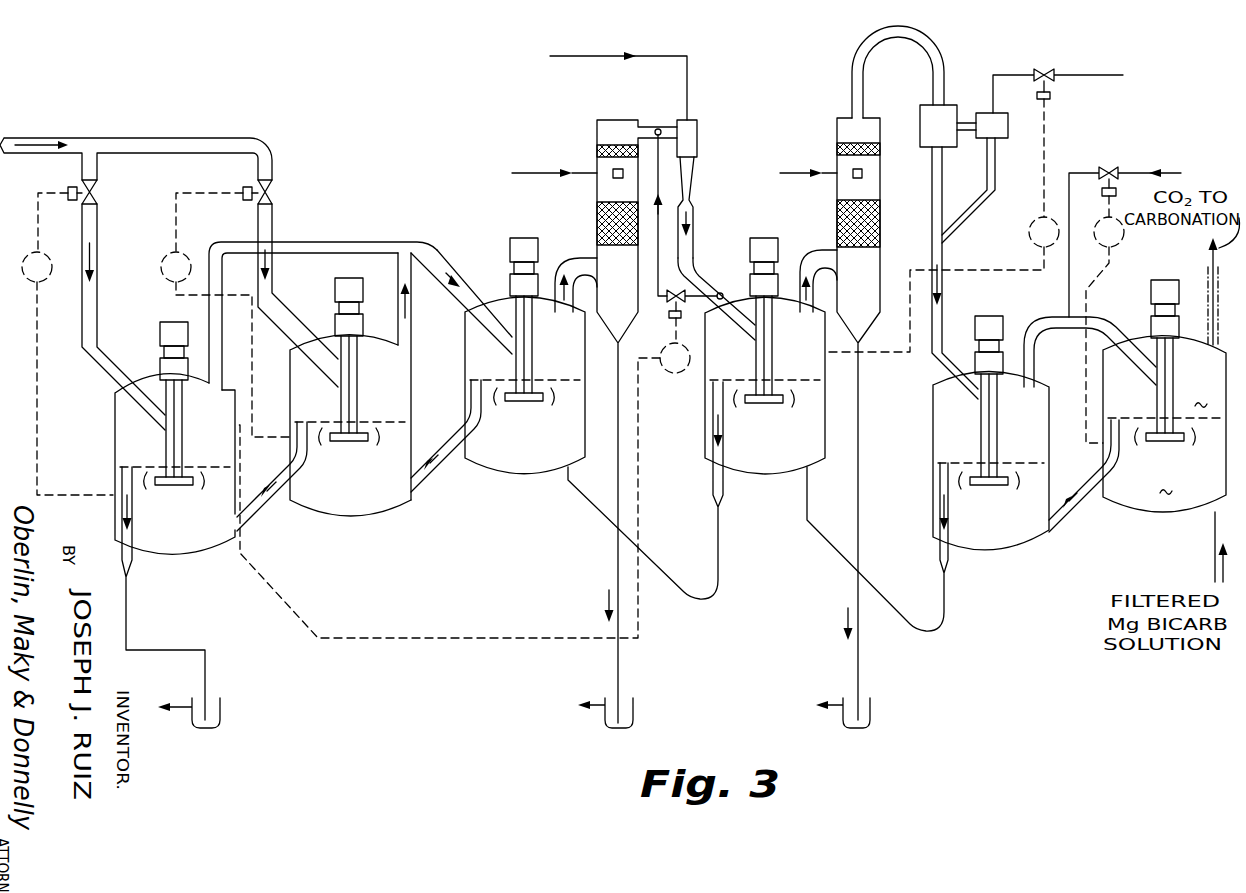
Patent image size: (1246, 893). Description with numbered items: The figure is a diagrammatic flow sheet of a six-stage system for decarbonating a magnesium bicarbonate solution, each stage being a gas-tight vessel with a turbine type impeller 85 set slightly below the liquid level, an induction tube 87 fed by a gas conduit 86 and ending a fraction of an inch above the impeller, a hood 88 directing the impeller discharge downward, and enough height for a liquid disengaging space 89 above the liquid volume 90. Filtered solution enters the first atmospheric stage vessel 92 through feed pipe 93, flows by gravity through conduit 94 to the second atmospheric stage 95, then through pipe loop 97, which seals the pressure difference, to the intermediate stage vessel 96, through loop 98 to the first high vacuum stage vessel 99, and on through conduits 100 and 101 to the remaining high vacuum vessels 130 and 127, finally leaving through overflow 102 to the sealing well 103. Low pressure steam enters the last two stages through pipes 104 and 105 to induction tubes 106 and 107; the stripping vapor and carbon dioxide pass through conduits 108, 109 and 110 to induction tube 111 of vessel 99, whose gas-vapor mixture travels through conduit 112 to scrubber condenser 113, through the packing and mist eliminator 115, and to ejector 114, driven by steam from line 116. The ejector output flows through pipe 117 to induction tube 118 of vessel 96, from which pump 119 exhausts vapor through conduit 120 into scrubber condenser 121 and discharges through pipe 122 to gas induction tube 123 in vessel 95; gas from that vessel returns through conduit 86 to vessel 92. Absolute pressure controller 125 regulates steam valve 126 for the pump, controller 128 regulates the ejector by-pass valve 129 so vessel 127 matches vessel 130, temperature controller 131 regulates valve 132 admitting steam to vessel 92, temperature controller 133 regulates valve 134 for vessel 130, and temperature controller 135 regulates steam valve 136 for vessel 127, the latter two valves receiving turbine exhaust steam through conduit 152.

The turbine type impeller 85 is at (1173, 441).
The conduit 86 is at (1108, 317).
The induction tube 87 is at (1176, 374).
The hood 88 is at (1196, 436).
The liquid disengaging space 89 is at (1200, 397).
The liquid volume 90 is at (1164, 456).
The first atmospheric stage vessel 92 is at (1141, 514).
The feed pipe 93 is at (1213, 529).
The conduit 94 is at (1080, 500).
The second atmospheric stage 95 is at (1026, 550).
The intermediate stage vessel 96 is at (772, 475).
The pipe loop 97 is at (945, 618).
The loop 98 is at (719, 581).
The No. 1 high vacuum stage vessel 99 is at (527, 474).
The conduit 100 is at (430, 468).
The conduit 101 is at (265, 501).
The overflow 102 is at (134, 566).
The sealing well 103 is at (221, 709).
The pipe 104 is at (98, 236).
The pipe 105 is at (274, 221).
The induction tube 106 is at (184, 414).
The induction tube 107 is at (359, 372).
The conduit 108 is at (208, 309).
The conduit 109 is at (412, 300).
The conduit 110 is at (447, 259).
The induction tube 111 is at (534, 336).
The conduit 112 is at (575, 258).
The scrubber condenser 113 is at (596, 194).
The ejector 114 is at (694, 177).
The scrubber packing and mist eliminator 115 is at (596, 145).
The line 116 is at (590, 56).
The pipe 117 is at (702, 283).
The induction tube 118 is at (773, 335).
The pump 119 is at (949, 105).
The conduit 120 is at (808, 251).
The scrubber condenser 121 is at (881, 183).
The pipe 122 is at (931, 212).
The gas induction tube 123 is at (999, 415).
The absolute pressure controller 125 is at (1028, 238).
The steam valve 126 is at (1050, 68).
The vessel 127 is at (203, 554).
The controller 128 is at (686, 369).
The ejector by-pass valve 129 is at (665, 300).
The vessel 130 is at (358, 517).
The temperature controller 131 is at (1124, 236).
The valve 132 is at (1110, 166).
The temperature controller 133 is at (182, 254).
The valve 134 is at (273, 190).
The temperature controller 135 is at (48, 257).
The steam valve 136 is at (98, 191).
The conduit 152 is at (30, 138).